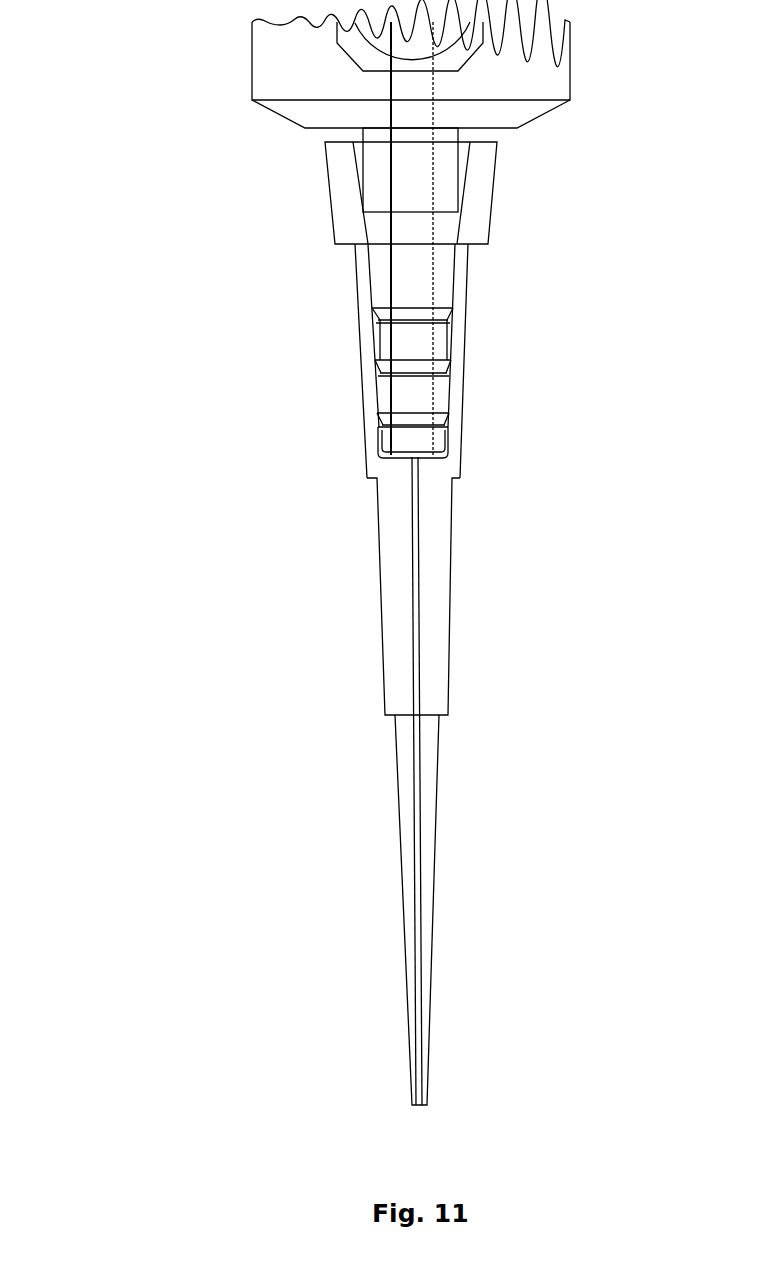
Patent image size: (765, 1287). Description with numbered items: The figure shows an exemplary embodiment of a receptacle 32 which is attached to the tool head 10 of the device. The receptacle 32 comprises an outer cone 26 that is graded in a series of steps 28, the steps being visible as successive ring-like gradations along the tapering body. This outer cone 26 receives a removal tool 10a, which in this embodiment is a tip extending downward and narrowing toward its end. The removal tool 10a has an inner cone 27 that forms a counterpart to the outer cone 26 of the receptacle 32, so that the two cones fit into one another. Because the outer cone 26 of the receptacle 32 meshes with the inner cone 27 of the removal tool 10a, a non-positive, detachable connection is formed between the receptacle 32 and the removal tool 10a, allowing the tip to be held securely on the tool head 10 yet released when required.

The tool head 10 is at (192, 129).
The removal tool 10a is at (490, 587).
The outer cone 26 is at (445, 285).
The inner cone 27 is at (447, 420).
The steps 28 is at (382, 282).
The receptacle 32 is at (458, 337).